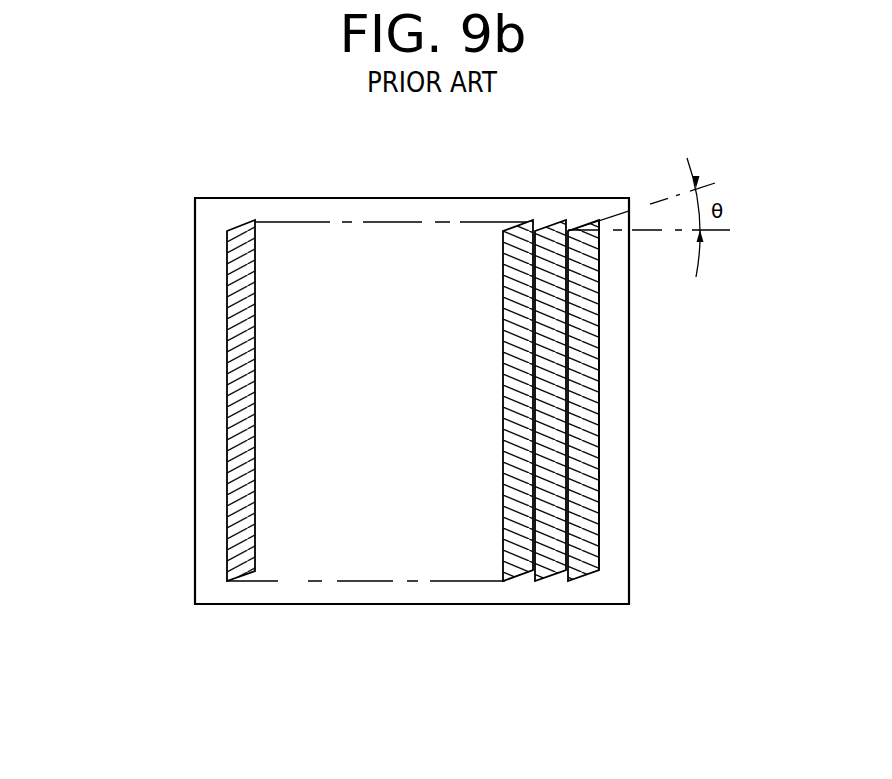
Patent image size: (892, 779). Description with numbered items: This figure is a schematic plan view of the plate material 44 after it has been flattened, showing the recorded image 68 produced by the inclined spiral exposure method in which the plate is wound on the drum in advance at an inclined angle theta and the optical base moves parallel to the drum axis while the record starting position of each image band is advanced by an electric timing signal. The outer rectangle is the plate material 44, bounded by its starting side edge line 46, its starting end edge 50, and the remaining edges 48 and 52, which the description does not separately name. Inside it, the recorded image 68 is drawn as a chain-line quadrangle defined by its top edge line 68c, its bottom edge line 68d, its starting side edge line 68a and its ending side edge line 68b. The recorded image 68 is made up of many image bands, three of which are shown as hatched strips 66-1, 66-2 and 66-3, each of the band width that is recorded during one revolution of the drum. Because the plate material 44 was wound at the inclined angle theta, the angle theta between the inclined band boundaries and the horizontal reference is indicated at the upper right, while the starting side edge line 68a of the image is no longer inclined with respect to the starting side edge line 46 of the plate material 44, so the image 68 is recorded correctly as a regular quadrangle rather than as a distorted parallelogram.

The plate material 44 is at (543, 212).
The starting side edge line 46 is at (630, 273).
The left side wall 48 is at (195, 403).
The starting end edge 50 is at (295, 197).
The bottom wall 52 is at (272, 604).
The image band 66-1 is at (583, 327).
The image band 66-2 is at (550, 382).
The image band 66-3 is at (520, 457).
The recorded image 68 is at (419, 398).
The starting side edge line 68a is at (602, 537).
The ending side edge line 68b is at (227, 527).
The top edge line 68c is at (395, 222).
The bottom edge line 68d is at (455, 581).